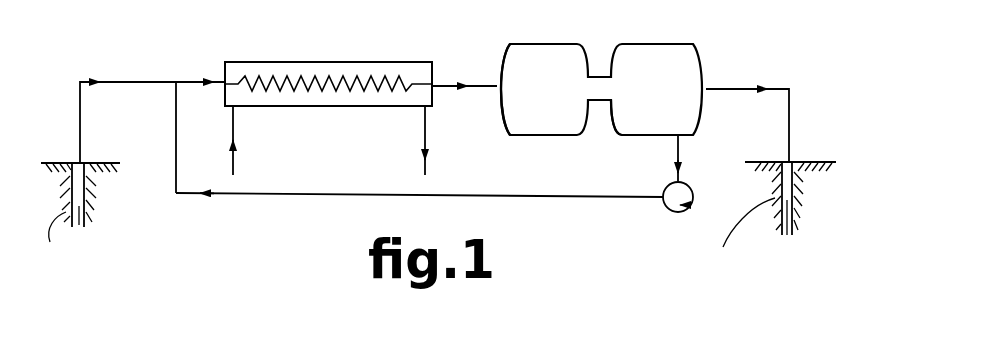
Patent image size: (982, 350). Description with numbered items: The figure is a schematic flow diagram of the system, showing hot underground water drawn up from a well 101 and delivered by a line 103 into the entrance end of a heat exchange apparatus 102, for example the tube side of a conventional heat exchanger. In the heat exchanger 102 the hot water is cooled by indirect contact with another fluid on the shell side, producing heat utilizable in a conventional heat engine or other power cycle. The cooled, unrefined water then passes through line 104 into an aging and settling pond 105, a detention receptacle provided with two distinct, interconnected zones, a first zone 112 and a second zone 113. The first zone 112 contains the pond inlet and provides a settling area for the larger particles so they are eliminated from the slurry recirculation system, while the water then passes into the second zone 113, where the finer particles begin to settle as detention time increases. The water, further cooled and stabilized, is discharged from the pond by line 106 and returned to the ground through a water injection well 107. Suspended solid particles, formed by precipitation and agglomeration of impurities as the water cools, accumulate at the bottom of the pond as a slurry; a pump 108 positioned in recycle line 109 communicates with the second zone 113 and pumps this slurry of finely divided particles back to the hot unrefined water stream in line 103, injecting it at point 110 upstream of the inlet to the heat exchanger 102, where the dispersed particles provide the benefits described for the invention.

The well 101 is at (88, 208).
The heat exchange apparatus 102 is at (268, 61).
The line 103 is at (148, 66).
The line 104 is at (477, 82).
The aging and settling pond 105 is at (590, 34).
The line 106 is at (742, 87).
The water injection well 107 is at (790, 214).
The pump 108 is at (666, 207).
The recycle line 109 is at (264, 196).
The point 110 is at (175, 86).
The first zone 112 is at (507, 136).
The second zone 113 is at (615, 134).